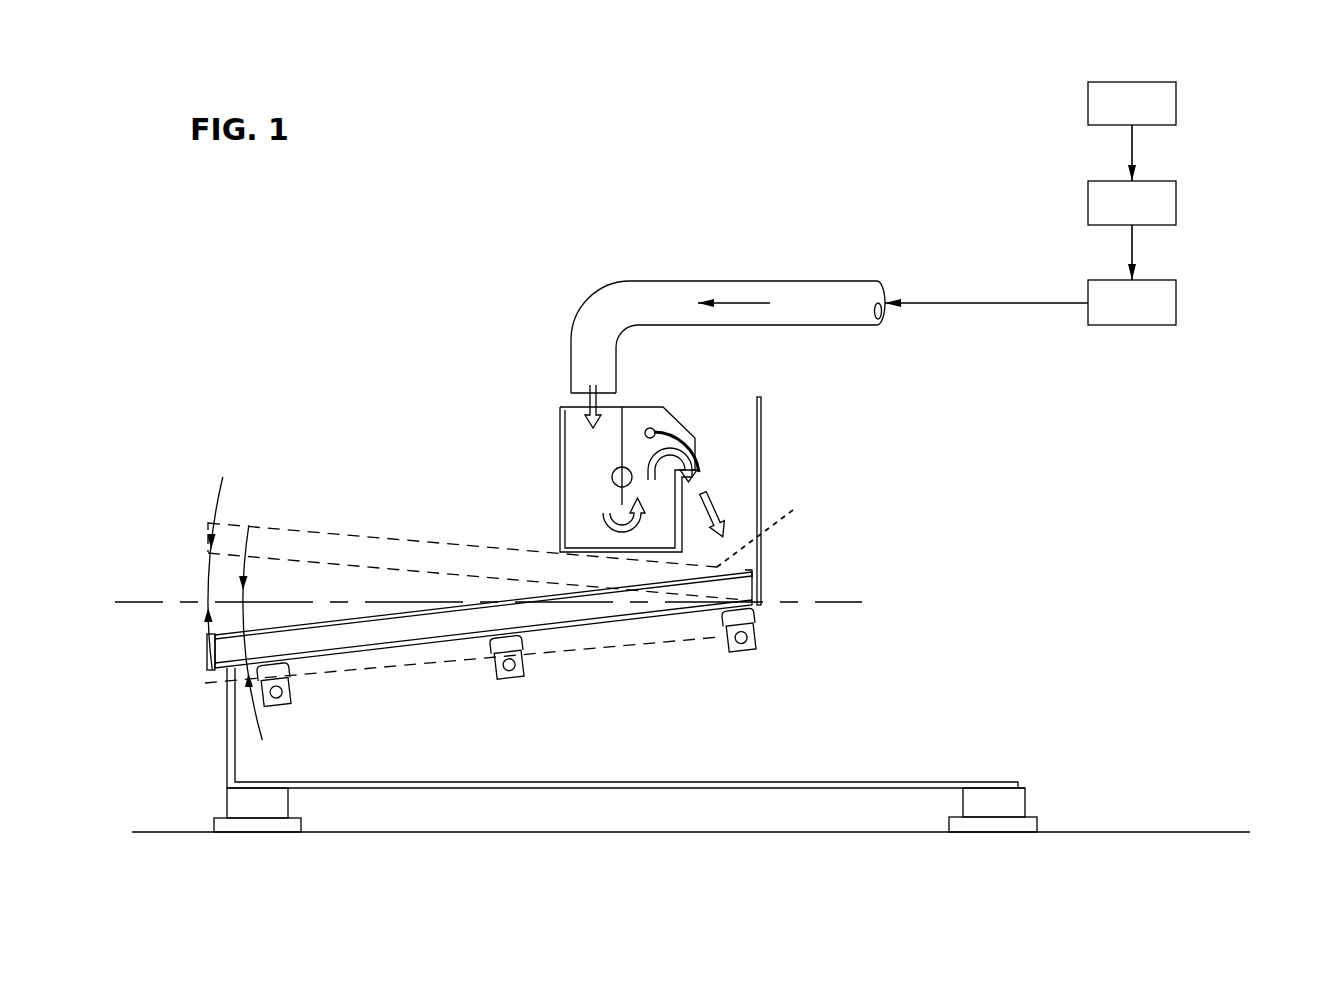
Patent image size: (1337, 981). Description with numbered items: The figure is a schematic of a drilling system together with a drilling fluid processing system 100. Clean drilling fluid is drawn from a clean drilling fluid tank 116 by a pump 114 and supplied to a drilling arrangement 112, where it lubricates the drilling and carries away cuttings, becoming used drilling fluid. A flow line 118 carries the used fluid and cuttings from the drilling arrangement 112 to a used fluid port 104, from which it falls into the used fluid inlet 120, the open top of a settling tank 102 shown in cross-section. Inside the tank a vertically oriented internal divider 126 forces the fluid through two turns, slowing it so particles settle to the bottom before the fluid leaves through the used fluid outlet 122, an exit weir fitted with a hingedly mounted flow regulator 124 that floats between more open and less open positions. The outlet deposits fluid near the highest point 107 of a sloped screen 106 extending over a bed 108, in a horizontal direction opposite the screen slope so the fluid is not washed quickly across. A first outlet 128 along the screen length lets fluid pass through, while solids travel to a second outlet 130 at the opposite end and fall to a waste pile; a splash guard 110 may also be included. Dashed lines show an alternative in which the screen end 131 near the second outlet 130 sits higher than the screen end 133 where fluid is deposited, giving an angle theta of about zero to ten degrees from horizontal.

The drilling fluid processing system 100 is at (1042, 604).
The settling tank 102 is at (500, 564).
The used fluid port 104 is at (560, 347).
The screen 106 is at (318, 558).
The highest point 107 is at (733, 587).
The bed 108 is at (698, 807).
The splash guard 110 is at (762, 465).
The drilling arrangement 112 is at (1177, 303).
The pump 114 is at (1177, 203).
The clean drilling fluid tank 116 is at (1177, 103).
The flow line 118 is at (813, 262).
The used fluid inlet 120 is at (638, 450).
The used fluid outlet 122 is at (697, 437).
The flow regulator 124 is at (673, 438).
The internal divider 126 is at (620, 453).
The first outlet 128 is at (577, 625).
The second outlet 130 is at (205, 657).
The screen end 131 is at (233, 522).
The screen end 133 is at (771, 526).